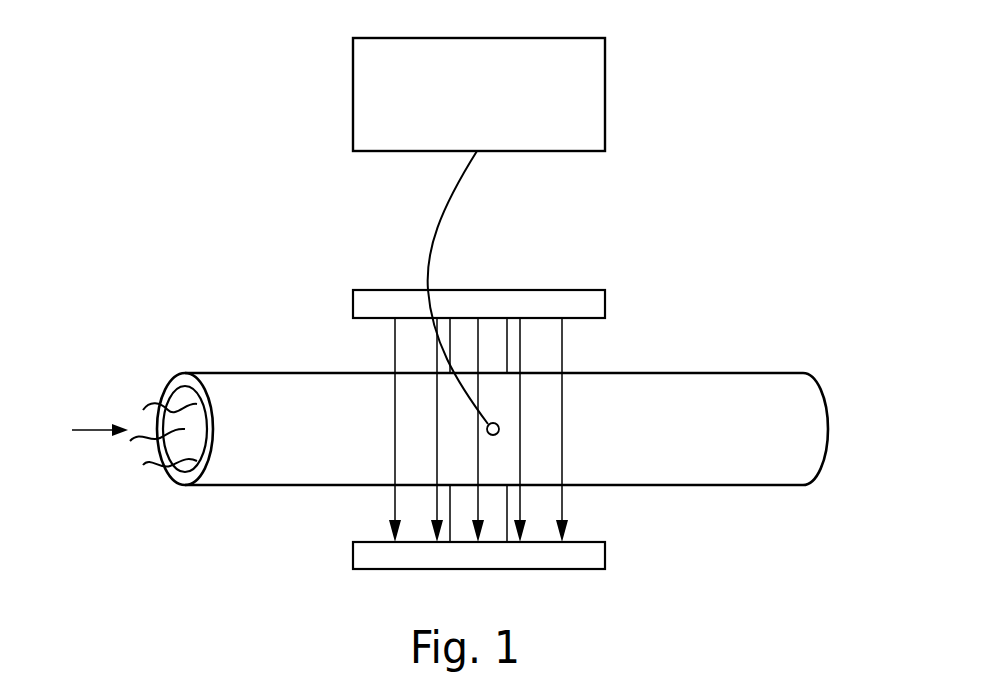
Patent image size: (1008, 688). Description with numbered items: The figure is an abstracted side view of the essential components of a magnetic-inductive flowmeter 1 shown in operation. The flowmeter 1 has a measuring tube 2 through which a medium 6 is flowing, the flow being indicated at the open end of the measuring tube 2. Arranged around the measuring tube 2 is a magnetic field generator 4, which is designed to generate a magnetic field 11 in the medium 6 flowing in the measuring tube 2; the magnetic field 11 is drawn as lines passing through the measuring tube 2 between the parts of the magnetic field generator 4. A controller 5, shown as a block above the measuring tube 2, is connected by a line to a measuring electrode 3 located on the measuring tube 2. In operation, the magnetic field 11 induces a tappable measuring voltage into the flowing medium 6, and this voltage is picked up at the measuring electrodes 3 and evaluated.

The magnetic-inductive flowmeter 1 is at (98, 63).
The measuring tube 2 is at (772, 429).
The measuring electrodes 3 is at (498, 434).
The magnetic field generator 4 is at (291, 319).
The controller 5 is at (371, 80).
The medium 6 is at (129, 489).
The magnetic field 11 is at (614, 354).